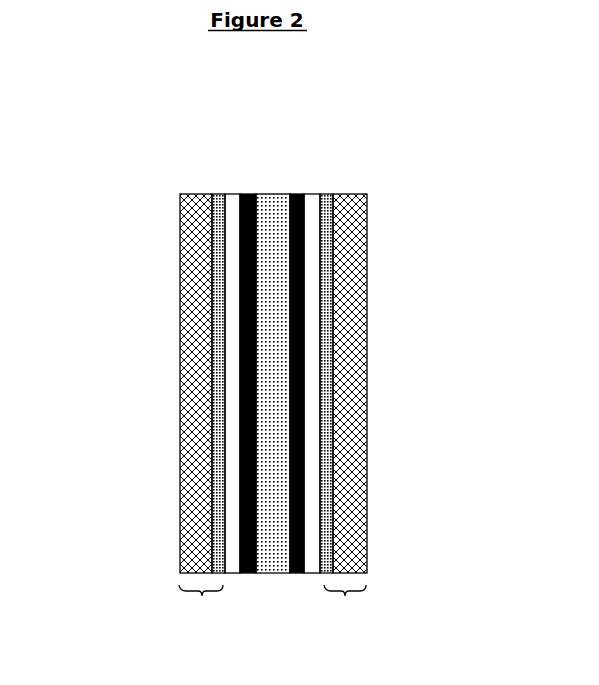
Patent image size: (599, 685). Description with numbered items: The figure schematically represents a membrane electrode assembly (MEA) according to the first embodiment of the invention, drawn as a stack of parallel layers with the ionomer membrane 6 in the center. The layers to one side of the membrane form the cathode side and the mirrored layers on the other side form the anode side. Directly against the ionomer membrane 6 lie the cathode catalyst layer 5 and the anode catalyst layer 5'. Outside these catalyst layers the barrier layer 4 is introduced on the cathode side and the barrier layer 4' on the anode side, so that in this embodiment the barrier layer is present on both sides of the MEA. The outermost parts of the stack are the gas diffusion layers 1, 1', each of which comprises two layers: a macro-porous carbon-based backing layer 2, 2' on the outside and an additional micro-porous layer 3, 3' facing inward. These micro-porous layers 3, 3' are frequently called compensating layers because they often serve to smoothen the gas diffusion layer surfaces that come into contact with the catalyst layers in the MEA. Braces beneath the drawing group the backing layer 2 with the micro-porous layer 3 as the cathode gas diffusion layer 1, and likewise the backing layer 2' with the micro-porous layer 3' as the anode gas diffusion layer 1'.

The gas diffusion layer 1 is at (201, 610).
The gas diffusion layer 1' is at (345, 610).
The macro-porous carbon-based backing layer 2 is at (137, 381).
The macro-porous carbon-based backing layer 2' is at (403, 382).
The micro-porous layer 3 is at (184, 360).
The micro-porous layer 3' is at (359, 365).
The barrier layer 4 is at (211, 340).
The barrier layer 4' is at (335, 349).
The cathode catalyst layer 5 is at (239, 334).
The anode catalyst layer 5' is at (307, 335).
The ionomer membrane 6 is at (272, 193).